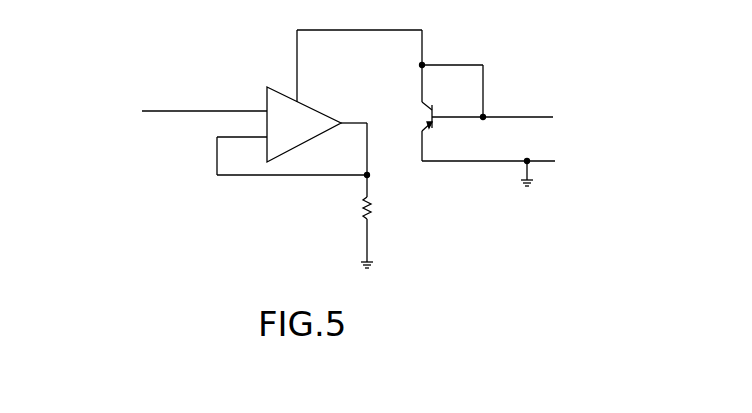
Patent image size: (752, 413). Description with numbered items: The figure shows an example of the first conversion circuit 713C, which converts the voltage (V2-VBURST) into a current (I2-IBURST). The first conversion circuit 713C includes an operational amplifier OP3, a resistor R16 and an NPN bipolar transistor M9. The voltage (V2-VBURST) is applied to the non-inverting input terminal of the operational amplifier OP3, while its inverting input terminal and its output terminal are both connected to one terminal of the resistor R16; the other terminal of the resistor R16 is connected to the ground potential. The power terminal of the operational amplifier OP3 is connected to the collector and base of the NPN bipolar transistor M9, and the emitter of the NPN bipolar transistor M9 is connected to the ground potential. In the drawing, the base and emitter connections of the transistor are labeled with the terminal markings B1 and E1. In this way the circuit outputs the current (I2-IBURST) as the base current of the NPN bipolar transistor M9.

The first conversion circuit 713C is at (308, 161).
The operational amplifier OP3 is at (324, 109).
The NPN bipolar transistor M9 is at (437, 124).
The resistor R16 is at (372, 207).
The base terminal B1 is at (531, 118).
The emitter terminal E1 is at (501, 170).